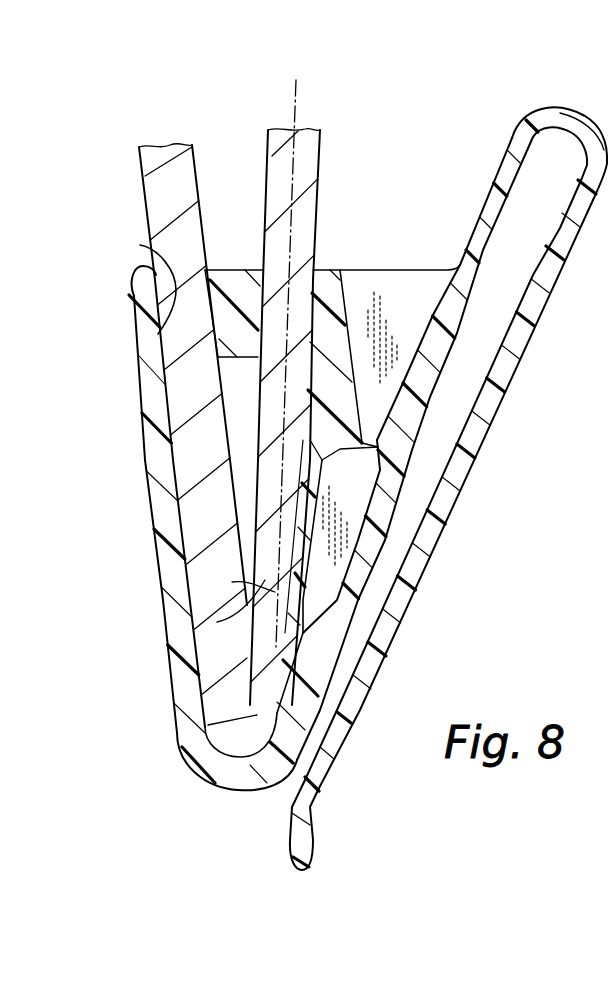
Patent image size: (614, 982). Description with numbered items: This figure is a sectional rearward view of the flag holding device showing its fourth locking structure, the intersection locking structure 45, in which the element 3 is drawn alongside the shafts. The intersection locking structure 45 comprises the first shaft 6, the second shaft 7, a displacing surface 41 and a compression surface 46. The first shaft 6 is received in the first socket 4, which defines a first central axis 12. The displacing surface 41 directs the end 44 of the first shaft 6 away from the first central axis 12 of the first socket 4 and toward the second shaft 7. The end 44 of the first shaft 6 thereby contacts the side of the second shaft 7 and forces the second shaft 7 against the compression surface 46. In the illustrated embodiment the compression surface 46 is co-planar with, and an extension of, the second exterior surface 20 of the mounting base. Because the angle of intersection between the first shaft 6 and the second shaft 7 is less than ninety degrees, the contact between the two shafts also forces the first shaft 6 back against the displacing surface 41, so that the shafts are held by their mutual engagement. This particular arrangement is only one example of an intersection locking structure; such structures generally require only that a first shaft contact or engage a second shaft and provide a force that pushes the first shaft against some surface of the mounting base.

The spring clip 3 is at (201, 678).
The first socket 4 is at (298, 255).
The first shaft 6 is at (320, 165).
The second shaft 7 is at (139, 176).
The first central axis 12 is at (296, 95).
The second exterior surface 20 is at (140, 245).
The displacing surface 41 is at (288, 633).
The end of first shaft 44 is at (217, 622).
The intersection locking structure 45 is at (236, 582).
The compression surface 46 is at (250, 718).